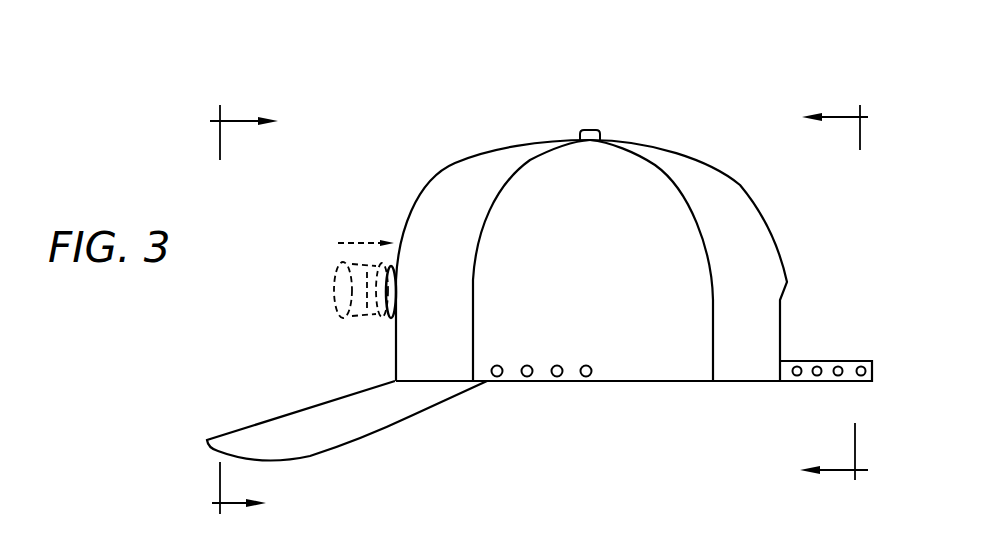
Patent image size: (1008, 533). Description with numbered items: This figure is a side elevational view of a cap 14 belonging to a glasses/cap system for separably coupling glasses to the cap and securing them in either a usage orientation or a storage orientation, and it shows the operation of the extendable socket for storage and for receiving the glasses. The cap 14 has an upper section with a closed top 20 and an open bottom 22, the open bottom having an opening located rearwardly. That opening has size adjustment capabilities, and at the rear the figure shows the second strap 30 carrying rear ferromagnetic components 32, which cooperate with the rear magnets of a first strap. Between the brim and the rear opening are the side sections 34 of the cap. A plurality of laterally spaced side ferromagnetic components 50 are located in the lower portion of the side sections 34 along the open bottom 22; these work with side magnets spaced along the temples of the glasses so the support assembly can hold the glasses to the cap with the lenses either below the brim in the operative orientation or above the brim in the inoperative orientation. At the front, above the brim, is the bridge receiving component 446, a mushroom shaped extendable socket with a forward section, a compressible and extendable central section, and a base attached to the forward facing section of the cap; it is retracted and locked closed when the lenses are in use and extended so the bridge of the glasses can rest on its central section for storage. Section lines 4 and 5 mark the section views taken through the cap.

The cap 14 is at (609, 219).
The closed top 20 is at (627, 141).
The open bottom 22 is at (612, 382).
The second strap 30 is at (827, 383).
The rear ferromagnetic components 32 is at (838, 363).
The side sections 34 is at (620, 317).
The side ferromagnetic components 50 is at (557, 373).
The bridge receiving component 446 is at (391, 318).
The section line 4- 4 is at (228, 312).
The section line 5- 5 is at (843, 292).